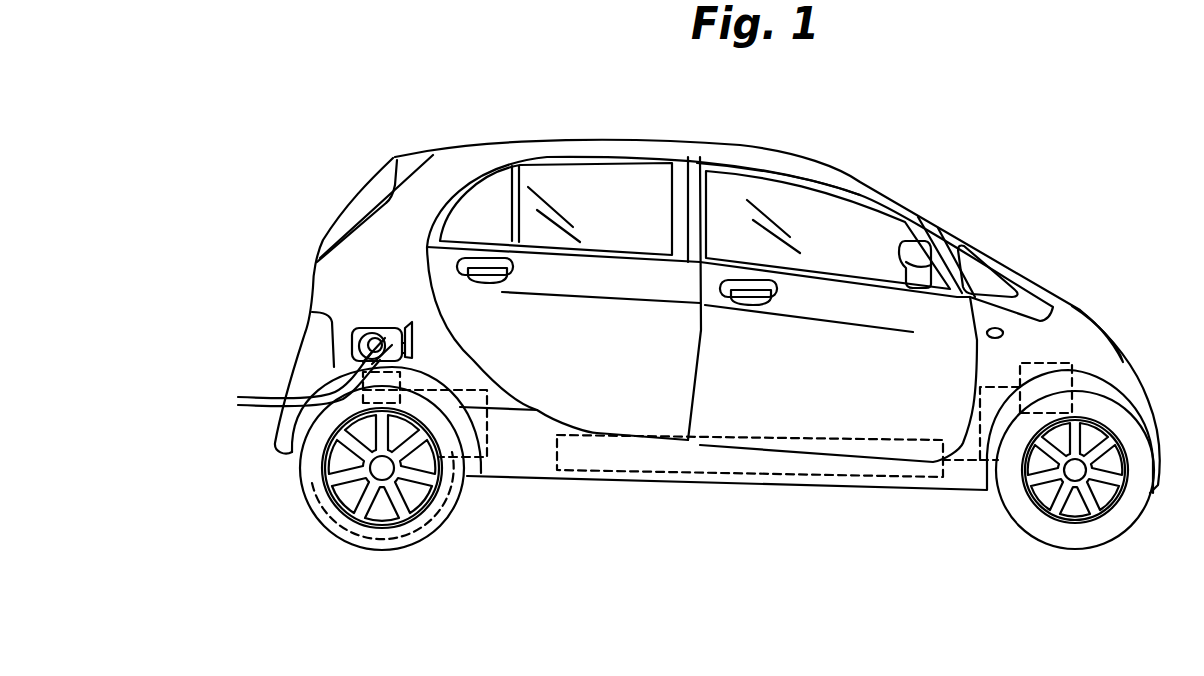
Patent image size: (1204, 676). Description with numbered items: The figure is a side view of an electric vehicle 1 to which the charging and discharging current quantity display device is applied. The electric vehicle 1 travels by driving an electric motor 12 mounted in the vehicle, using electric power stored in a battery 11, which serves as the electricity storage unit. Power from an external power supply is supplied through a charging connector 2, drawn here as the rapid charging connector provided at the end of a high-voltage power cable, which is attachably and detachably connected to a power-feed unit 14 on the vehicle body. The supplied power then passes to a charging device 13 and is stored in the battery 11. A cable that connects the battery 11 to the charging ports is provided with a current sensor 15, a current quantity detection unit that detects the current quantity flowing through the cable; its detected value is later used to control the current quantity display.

The electric vehicle 1 is at (943, 166).
The charging connector 2 is at (373, 330).
The battery 11 is at (708, 477).
The electric motor 12 is at (1080, 367).
The charging device 13 is at (300, 480).
The power-feed unit 14 is at (330, 345).
The current sensor 15 is at (458, 458).